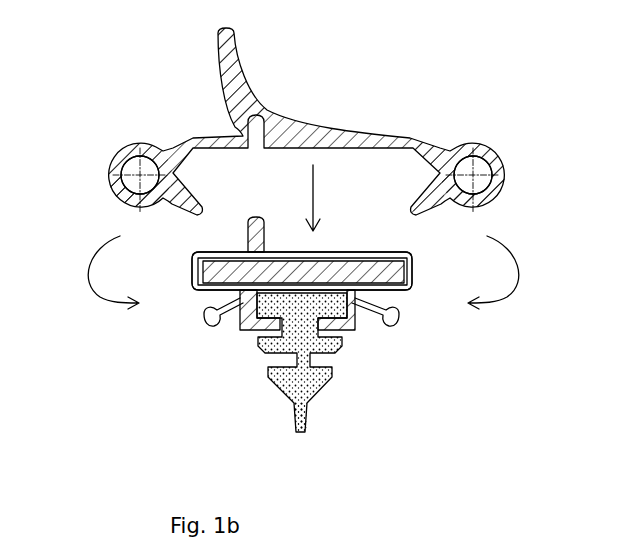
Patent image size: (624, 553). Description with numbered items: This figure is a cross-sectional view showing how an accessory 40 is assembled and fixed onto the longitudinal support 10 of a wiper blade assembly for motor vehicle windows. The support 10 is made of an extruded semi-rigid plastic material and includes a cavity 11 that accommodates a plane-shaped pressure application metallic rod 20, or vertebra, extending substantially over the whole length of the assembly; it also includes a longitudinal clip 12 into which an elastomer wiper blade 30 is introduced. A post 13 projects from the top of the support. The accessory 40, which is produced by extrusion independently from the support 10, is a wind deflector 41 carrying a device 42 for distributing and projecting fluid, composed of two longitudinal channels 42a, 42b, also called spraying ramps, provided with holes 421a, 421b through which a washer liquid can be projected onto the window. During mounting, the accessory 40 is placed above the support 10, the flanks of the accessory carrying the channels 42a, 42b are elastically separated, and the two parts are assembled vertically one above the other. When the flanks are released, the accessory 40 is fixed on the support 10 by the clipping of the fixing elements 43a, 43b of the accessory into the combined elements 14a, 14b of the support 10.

The longitudinal support 10 is at (186, 299).
The cavity 11 is at (384, 259).
The longitudinal clip 12 is at (340, 332).
The locating post 13 is at (252, 216).
The combined element 14a is at (393, 329).
The combined element 14b is at (213, 329).
The pressure application metallic rod 20 is at (413, 288).
The elastomer wiper blade 30 is at (300, 434).
The accessory 40 is at (306, 99).
The wind deflector 41 is at (237, 49).
The device for distributing and projecting fluid 42 is at (437, 136).
The longitudinal channel 42a is at (477, 146).
The longitudinal channel 42b is at (131, 151).
The hole 421a is at (500, 196).
The hole 421b is at (111, 197).
The fixing element 43a is at (428, 216).
The fixing element 43b is at (177, 214).